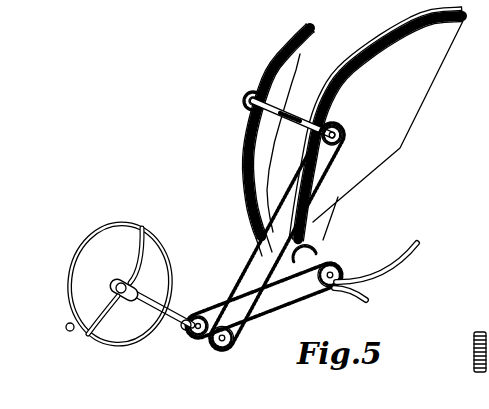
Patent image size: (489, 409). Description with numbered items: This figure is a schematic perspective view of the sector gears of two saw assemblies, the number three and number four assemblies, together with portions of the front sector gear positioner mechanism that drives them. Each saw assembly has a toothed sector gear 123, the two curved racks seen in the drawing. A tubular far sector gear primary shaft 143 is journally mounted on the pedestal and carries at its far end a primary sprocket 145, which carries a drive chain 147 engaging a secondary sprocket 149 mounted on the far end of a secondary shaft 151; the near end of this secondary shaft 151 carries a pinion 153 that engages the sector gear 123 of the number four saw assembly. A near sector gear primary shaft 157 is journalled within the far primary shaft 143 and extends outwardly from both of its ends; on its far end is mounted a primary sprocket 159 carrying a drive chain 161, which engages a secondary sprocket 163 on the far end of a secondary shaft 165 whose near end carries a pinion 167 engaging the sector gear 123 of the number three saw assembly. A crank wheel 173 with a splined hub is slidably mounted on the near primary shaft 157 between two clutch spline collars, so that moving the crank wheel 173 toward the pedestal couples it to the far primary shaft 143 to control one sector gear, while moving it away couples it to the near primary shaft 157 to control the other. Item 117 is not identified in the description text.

The frame member 117 is at (198, 0).
The sector gear 123 is at (251, 196).
The far sector gear primary shaft 143 is at (175, 311).
The primary sprocket 145 is at (190, 341).
The drive chain 147 is at (298, 319).
The secondary sprocket 149 is at (334, 289).
The secondary shaft 151 is at (334, 259).
The pinion 153 is at (327, 243).
The near sector gear primary shaft 157 is at (203, 344).
The primary sprocket 159 is at (229, 349).
The drive chain 161 is at (246, 256).
The secondary sprocket 163 is at (342, 129).
The secondary shaft 165 is at (282, 110).
The pinion 167 is at (243, 107).
The crank wheel 173 is at (83, 246).